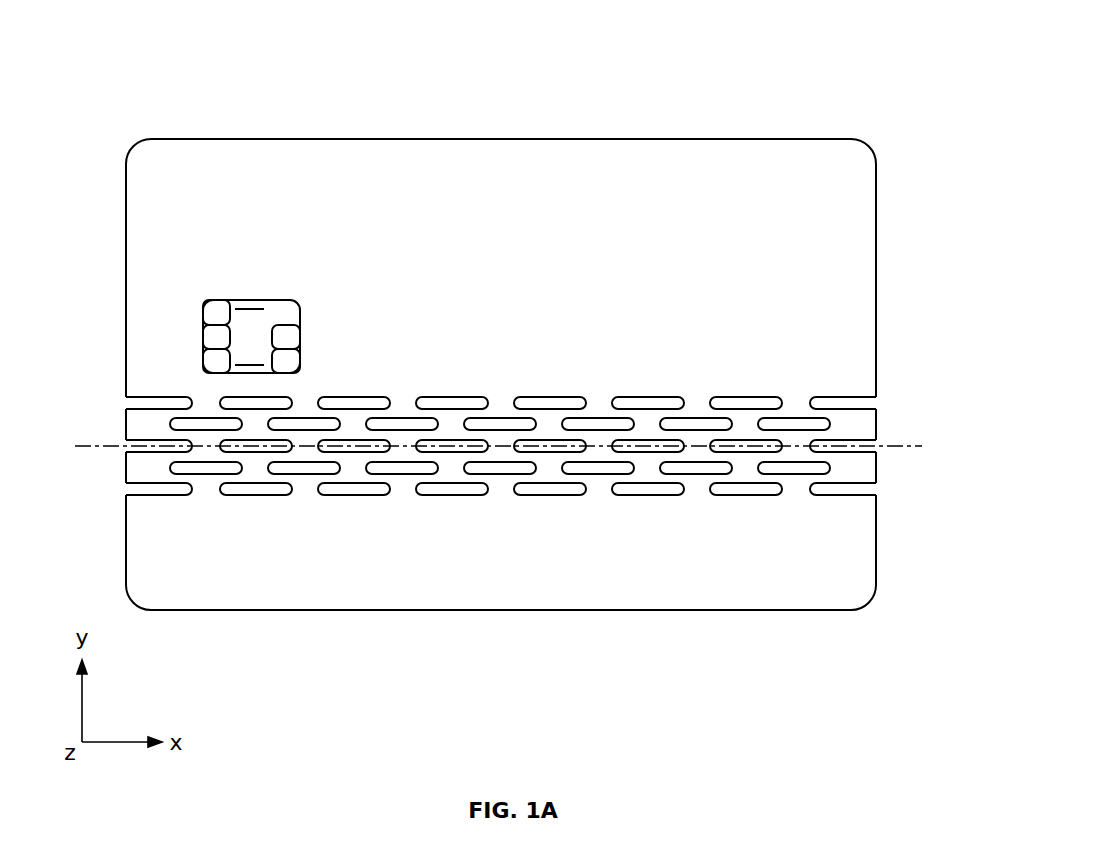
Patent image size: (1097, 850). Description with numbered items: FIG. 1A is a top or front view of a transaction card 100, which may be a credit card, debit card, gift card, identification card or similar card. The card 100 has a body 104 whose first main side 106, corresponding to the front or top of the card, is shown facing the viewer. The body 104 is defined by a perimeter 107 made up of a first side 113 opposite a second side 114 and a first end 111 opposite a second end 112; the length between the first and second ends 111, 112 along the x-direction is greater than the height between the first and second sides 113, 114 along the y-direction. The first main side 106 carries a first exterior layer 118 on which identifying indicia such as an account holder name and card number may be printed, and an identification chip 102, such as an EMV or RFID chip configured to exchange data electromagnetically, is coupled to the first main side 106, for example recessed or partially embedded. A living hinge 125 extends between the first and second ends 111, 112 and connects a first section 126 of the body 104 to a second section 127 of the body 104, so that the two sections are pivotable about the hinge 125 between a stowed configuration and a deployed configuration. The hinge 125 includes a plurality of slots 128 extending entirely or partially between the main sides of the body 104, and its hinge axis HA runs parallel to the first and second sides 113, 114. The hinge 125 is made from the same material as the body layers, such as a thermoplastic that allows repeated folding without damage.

The transaction card 100 is at (163, 35).
The identification chip 102 is at (245, 300).
The body 104 is at (833, 147).
The first main side 106 is at (203, 153).
The perimeter 107 is at (830, 610).
The first end 111 is at (89, 165).
The second end 112 is at (897, 258).
The first side 113 is at (449, 127).
The second side 114 is at (419, 637).
The first exterior layer 118 is at (525, 271).
The living hinge 125 is at (848, 419).
The first section 126 is at (738, 176).
The second section 127 is at (744, 591).
The slots 128 is at (452, 403).
The hinge axis HA is at (893, 446).